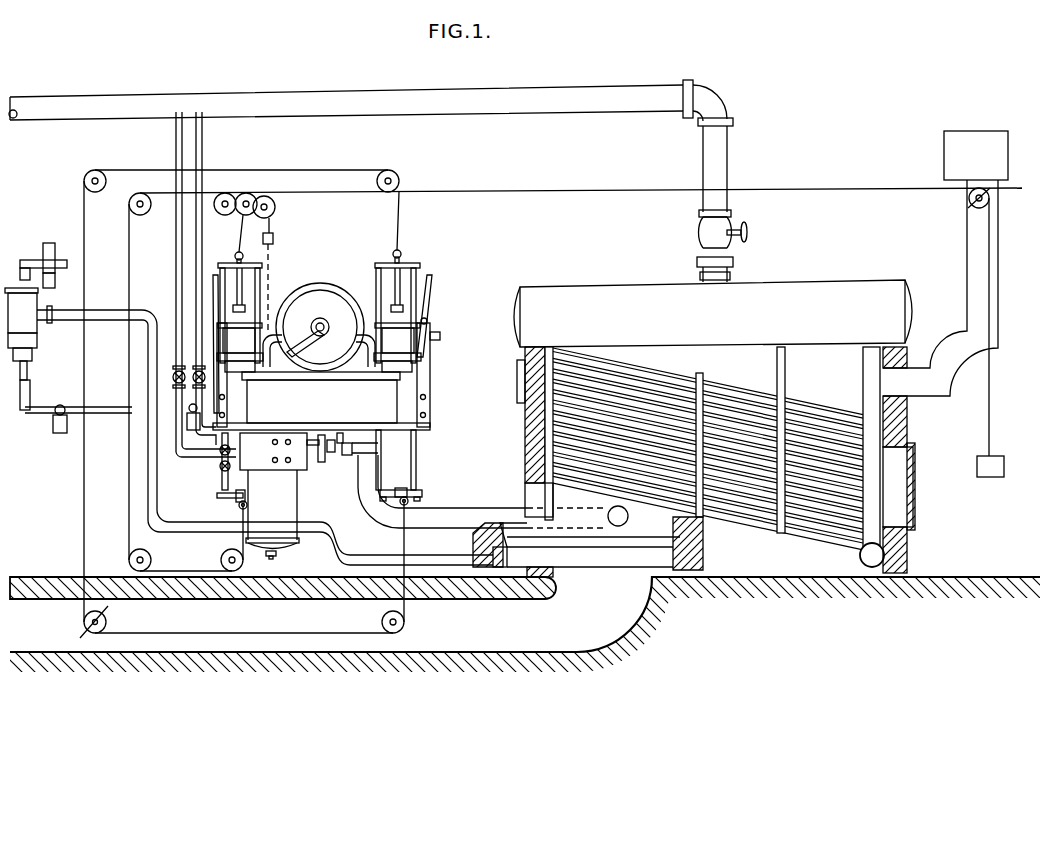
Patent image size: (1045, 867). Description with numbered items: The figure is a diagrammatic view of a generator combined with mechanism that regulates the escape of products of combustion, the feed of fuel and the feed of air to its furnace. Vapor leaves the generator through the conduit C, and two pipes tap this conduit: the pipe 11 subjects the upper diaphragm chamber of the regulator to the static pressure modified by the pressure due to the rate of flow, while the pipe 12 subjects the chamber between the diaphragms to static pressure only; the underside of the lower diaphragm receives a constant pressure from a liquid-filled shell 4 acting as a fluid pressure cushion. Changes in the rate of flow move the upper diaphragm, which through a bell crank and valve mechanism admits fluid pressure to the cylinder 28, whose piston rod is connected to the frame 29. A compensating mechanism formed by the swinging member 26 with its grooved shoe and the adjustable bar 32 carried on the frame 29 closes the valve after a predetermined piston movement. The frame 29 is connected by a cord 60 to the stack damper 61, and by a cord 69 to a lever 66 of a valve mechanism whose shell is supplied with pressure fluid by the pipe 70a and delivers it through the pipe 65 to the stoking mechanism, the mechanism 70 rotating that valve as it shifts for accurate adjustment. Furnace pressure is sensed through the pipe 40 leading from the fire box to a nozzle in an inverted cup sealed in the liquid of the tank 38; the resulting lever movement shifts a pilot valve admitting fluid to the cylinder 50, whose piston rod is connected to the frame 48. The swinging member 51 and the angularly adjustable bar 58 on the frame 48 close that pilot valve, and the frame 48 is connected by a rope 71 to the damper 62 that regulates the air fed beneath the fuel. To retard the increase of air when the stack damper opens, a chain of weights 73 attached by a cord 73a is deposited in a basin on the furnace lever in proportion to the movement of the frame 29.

The conduit C is at (358, 93).
The shell 4 is at (292, 506).
The pipe 11 is at (203, 152).
The pipe 12 is at (176, 152).
The swinging member 26 is at (201, 369).
The cylinder 28 is at (235, 399).
The frame 29 is at (260, 297).
The bar 32 is at (212, 276).
The tank 38 is at (321, 401).
The pipe 40 is at (470, 502).
The frame 48 is at (374, 280).
The cylinder 50 is at (400, 343).
The swinging member 51 is at (429, 383).
The bar 58 is at (432, 283).
The cord 60 is at (572, 186).
The stack damper 61 is at (1018, 189).
The damper 62 is at (112, 611).
The pipe 65 is at (151, 316).
The lever 66 is at (106, 408).
The cord 69 is at (147, 275).
The valve rotating mechanism 70 is at (47, 253).
The pipe 70a is at (55, 350).
The rope 71 is at (305, 633).
The chain of weights 73 is at (275, 268).
The cord 73a is at (275, 225).